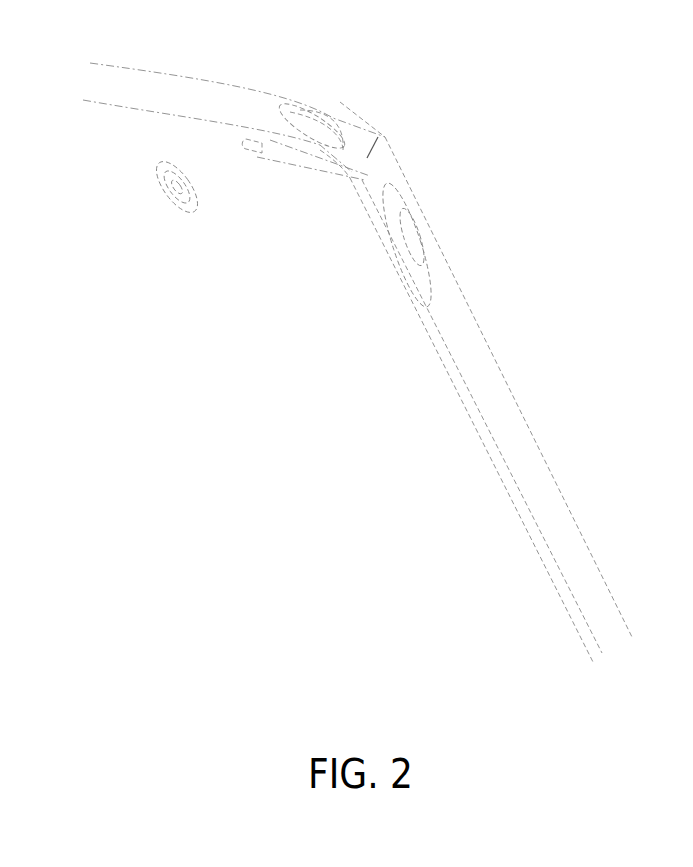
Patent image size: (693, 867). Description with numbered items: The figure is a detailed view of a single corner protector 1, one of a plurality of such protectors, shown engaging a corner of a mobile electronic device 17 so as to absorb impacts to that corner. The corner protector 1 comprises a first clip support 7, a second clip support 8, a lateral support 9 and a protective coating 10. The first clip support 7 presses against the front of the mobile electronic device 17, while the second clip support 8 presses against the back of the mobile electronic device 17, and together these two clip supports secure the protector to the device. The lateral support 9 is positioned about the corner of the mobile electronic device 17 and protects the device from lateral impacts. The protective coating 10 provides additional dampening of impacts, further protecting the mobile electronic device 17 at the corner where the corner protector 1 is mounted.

The corner protector 1 is at (472, 80).
The first clip support 7 is at (323, 113).
The second clip support 8 is at (343, 183).
The lateral support 9 is at (328, 147).
The protective coating 10 is at (365, 167).
The mobile electronic device 17 is at (517, 433).